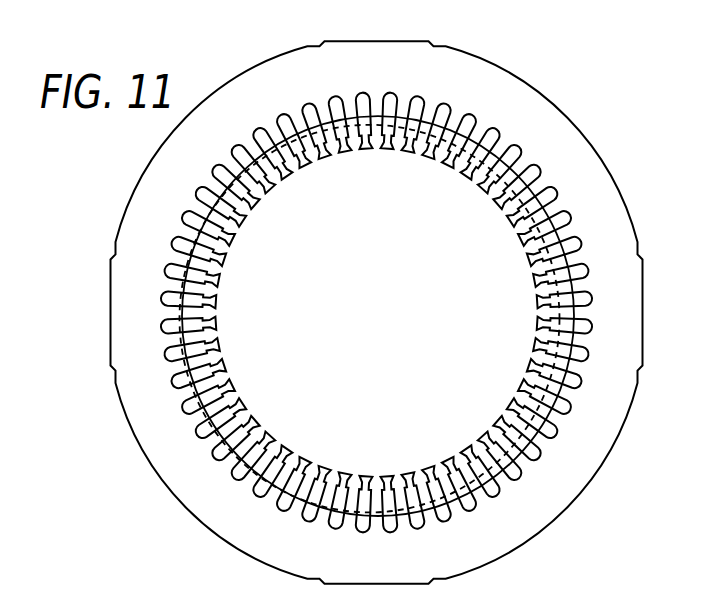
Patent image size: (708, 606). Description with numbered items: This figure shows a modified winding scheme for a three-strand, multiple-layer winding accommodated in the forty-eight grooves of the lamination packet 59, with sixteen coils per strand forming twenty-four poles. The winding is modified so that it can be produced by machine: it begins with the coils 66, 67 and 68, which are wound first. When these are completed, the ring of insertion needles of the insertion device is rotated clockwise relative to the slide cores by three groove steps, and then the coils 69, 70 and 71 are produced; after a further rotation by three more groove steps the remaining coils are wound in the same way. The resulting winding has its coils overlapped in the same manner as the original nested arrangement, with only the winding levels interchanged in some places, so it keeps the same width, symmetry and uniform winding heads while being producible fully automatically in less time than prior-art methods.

The lamination packet 59 is at (553, 503).
The coil 66 is at (398, 526).
The coil 67 is at (541, 185).
The coil 68 is at (200, 195).
The coil 69 is at (453, 508).
The coil 70 is at (526, 160).
The coil 71 is at (180, 253).